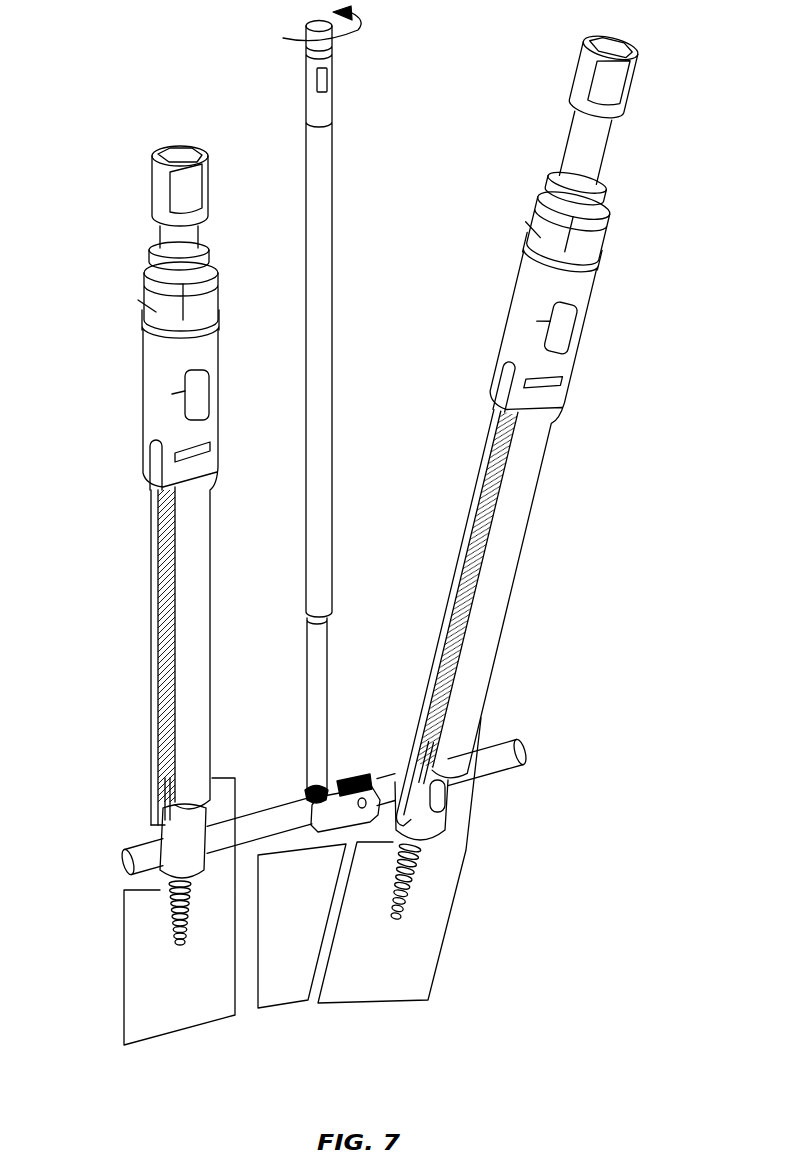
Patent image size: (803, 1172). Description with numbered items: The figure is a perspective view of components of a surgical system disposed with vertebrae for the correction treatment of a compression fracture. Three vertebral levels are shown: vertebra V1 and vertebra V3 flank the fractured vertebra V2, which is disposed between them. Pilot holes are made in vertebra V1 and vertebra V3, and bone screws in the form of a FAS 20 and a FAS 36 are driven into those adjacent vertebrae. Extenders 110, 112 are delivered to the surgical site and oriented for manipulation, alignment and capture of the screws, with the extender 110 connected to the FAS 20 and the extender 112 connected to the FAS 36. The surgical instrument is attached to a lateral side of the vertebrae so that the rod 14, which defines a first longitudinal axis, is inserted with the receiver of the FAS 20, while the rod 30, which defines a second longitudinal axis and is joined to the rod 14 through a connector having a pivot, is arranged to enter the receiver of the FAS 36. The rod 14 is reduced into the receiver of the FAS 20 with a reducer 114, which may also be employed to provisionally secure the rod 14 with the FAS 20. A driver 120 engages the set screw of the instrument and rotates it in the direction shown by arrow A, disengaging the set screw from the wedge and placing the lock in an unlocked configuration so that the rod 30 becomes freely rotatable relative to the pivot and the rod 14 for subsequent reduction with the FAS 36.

The extender 110 is at (138, 485).
The extender 112 is at (580, 290).
The reducer 114 is at (124, 632).
The driver 120 is at (322, 214).
The rod 14 is at (131, 852).
The rod 30 is at (507, 750).
The FAS 20 is at (163, 915).
The FAS 36 is at (418, 882).
The arrow A is at (332, 24).
The vertebra V1 is at (160, 1022).
The vertebra V2 is at (282, 983).
The vertebra V3 is at (420, 985).